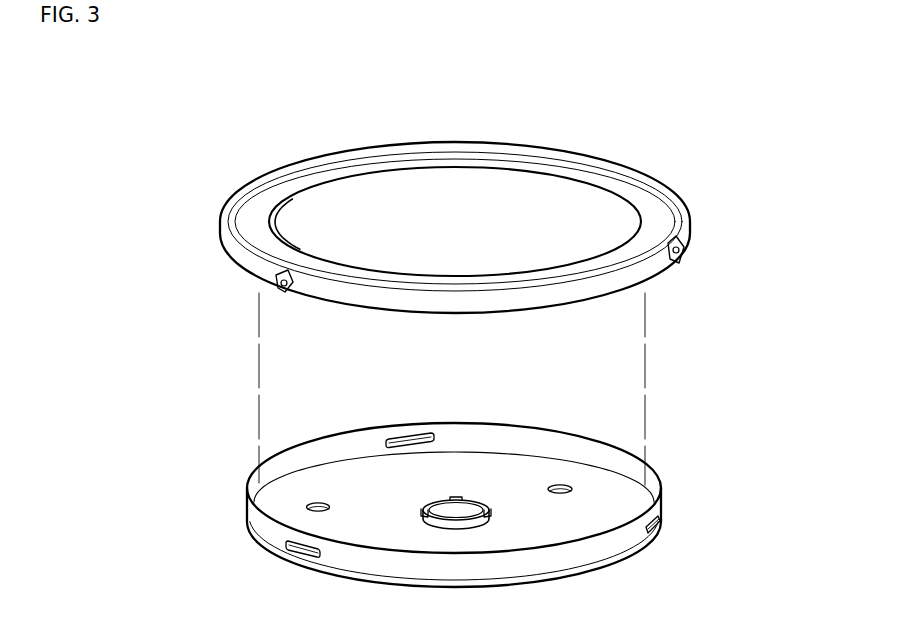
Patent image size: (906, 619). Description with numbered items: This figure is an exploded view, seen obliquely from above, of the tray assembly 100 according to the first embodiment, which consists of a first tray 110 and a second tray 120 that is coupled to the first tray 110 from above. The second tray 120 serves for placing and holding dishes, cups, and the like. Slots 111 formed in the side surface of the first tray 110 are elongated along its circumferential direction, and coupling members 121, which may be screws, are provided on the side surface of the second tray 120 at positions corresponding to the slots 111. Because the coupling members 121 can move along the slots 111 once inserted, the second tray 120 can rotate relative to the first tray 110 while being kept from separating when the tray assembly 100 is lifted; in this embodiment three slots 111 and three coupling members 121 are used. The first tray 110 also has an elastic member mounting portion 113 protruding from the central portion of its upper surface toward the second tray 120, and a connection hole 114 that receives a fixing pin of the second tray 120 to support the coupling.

The tray assembly 100 is at (161, 104).
The first tray 110 is at (660, 461).
The slots 111 is at (662, 522).
The elastic member mounting portion 113 is at (469, 503).
The connection hole 114 is at (561, 485).
The second tray 120 is at (686, 200).
The coupling members 121 is at (684, 244).